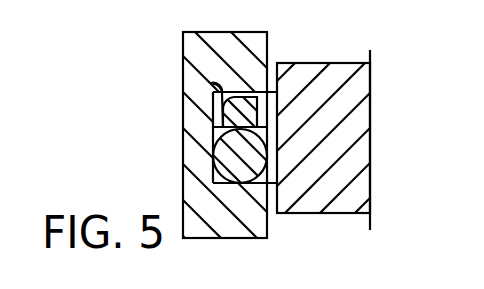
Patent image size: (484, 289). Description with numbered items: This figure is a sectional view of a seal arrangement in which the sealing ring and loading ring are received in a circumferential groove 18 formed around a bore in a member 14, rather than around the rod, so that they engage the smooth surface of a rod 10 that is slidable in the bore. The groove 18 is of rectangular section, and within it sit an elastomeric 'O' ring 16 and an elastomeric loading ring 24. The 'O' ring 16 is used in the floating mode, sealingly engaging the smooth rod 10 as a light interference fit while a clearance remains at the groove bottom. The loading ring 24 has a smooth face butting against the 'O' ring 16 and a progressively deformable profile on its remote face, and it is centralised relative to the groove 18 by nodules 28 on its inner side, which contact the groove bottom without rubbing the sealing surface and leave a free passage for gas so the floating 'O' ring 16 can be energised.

The shaft 10 is at (358, 87).
The member 14 is at (183, 183).
The 'O' ring 16 is at (262, 160).
The groove 18 is at (208, 81).
The loading ring 24 is at (255, 113).
The nodules 28 is at (213, 124).